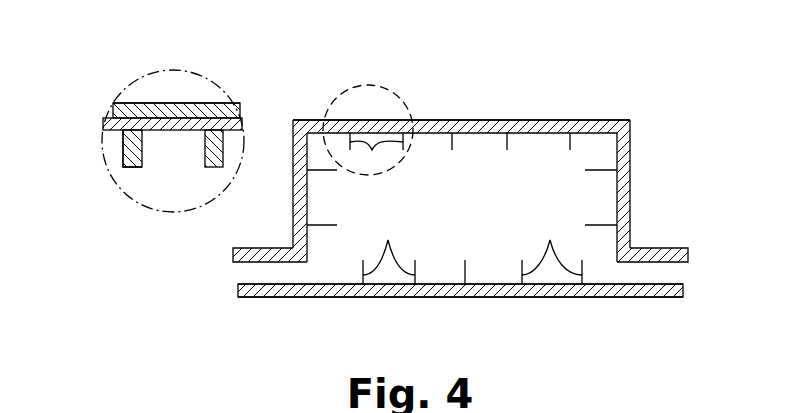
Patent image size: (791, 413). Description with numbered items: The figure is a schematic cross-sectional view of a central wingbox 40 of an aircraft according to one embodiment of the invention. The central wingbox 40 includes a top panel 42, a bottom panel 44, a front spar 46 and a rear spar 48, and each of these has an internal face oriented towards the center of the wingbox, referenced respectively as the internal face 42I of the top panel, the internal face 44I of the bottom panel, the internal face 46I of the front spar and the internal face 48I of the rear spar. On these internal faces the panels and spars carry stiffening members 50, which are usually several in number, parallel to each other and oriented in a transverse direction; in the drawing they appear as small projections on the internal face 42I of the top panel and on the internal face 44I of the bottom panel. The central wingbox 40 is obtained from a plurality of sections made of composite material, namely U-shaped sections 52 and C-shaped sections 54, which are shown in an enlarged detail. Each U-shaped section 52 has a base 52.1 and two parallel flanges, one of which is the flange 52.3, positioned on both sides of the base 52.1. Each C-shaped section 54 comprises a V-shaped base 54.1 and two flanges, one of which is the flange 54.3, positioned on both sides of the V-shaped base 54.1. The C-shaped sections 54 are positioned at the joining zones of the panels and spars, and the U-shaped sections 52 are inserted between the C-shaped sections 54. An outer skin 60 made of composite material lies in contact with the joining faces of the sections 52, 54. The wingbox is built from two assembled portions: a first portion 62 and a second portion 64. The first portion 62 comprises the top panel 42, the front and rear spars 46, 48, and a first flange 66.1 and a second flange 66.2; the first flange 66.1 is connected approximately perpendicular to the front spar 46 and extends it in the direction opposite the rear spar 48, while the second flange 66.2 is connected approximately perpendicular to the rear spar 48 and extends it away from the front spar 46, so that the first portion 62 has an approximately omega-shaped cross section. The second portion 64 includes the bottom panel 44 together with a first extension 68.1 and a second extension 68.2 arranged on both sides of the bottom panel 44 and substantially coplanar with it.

The central wingbox 40 is at (676, 93).
The top panel 42 is at (500, 110).
The internal face of the top panel 42I is at (473, 134).
The bottom panel 44 is at (465, 306).
The internal face of the bottom panel 44I is at (493, 284).
The front spar 46 is at (282, 174).
The internal face of the front spar 46I is at (307, 210).
The rear spar 48 is at (642, 191).
The internal face of the rear spar 48I is at (617, 187).
The stiffening member 50 is at (452, 180).
The U-shaped section 52 is at (169, 141).
The base 52.1 is at (193, 126).
The flange 52.3 is at (205, 165).
The C-shaped section 54 is at (103, 146).
The V-shaped base 54.1 is at (113, 110).
The flange 54.3 is at (121, 168).
The outer skin 60 is at (146, 95).
The first portion 62 is at (715, 113).
The second portion 64 is at (712, 272).
The first flange 66.1 is at (225, 266).
The second flange 66.2 is at (660, 248).
The first extension 68.1 is at (265, 297).
The second extension 68.2 is at (662, 297).